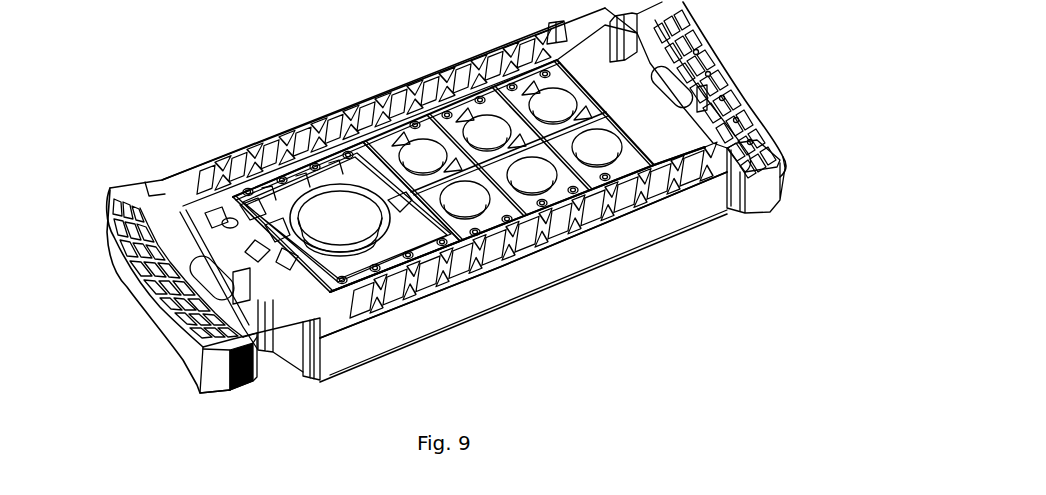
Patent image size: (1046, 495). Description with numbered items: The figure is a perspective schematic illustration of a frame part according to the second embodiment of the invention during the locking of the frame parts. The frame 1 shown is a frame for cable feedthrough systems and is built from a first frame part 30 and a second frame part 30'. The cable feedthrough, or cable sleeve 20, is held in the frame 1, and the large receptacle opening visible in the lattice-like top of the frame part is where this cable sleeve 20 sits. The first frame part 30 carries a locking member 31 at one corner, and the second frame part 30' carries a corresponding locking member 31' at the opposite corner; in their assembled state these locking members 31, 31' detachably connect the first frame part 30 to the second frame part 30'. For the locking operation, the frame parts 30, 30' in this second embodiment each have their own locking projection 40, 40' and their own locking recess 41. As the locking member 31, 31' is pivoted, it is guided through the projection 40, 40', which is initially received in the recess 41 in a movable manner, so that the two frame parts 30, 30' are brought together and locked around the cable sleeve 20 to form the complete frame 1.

The frame 1 is at (218, 47).
The cable sleeve 20 is at (363, 178).
The first frame part 30 is at (340, 114).
The second frame part 30' is at (523, 269).
The locking member 31 is at (744, 261).
The locking member 31' is at (186, 348).
The locking projection 40 is at (492, 27).
The locking projection 40' is at (388, 356).
The locking recess 41 is at (637, 45).